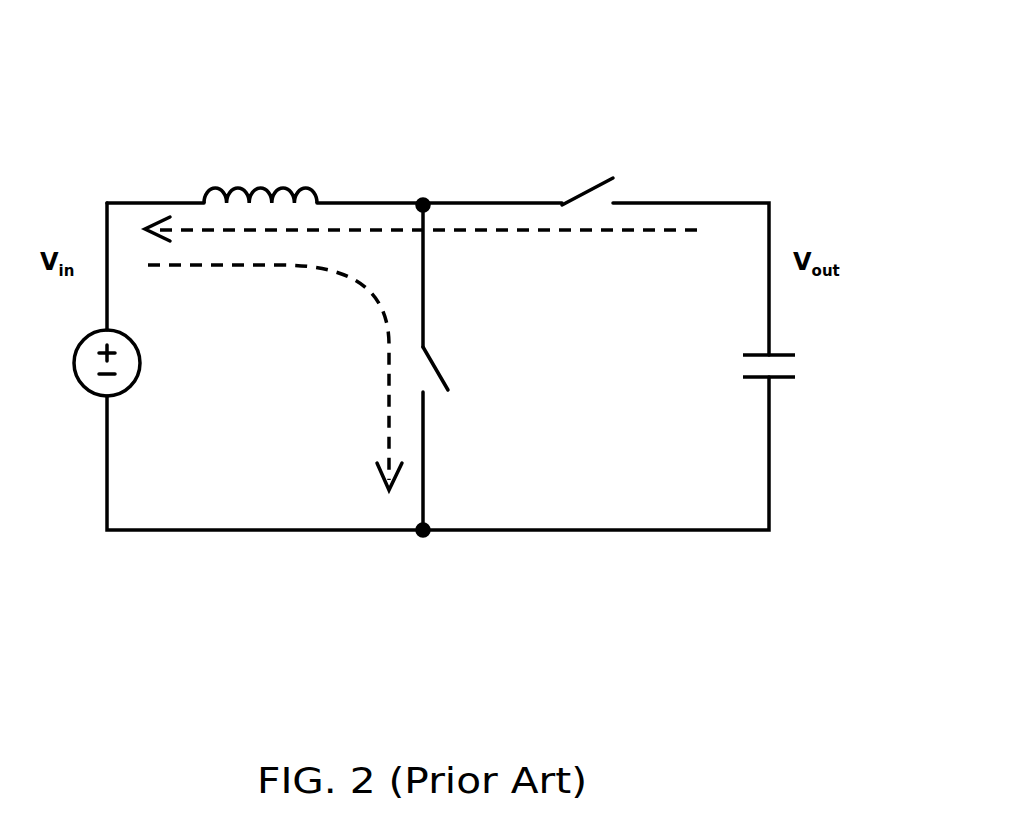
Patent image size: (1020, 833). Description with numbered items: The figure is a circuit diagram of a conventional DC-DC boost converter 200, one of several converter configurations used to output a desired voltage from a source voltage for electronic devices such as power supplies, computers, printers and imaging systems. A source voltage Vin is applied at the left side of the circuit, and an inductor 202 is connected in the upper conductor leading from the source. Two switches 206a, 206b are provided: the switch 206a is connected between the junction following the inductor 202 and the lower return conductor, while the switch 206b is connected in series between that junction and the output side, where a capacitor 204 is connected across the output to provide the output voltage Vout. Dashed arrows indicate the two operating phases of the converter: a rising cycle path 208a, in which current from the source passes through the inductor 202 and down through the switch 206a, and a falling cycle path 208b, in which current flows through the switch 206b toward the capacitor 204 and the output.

The DC-DC boost converter 200 is at (849, 43).
The inductor 202 is at (265, 186).
The capacitor 204 is at (784, 351).
The switch 206a is at (440, 366).
The switch 206b is at (587, 191).
The rising cycle path 208a is at (287, 267).
The falling cycle path 208b is at (540, 233).